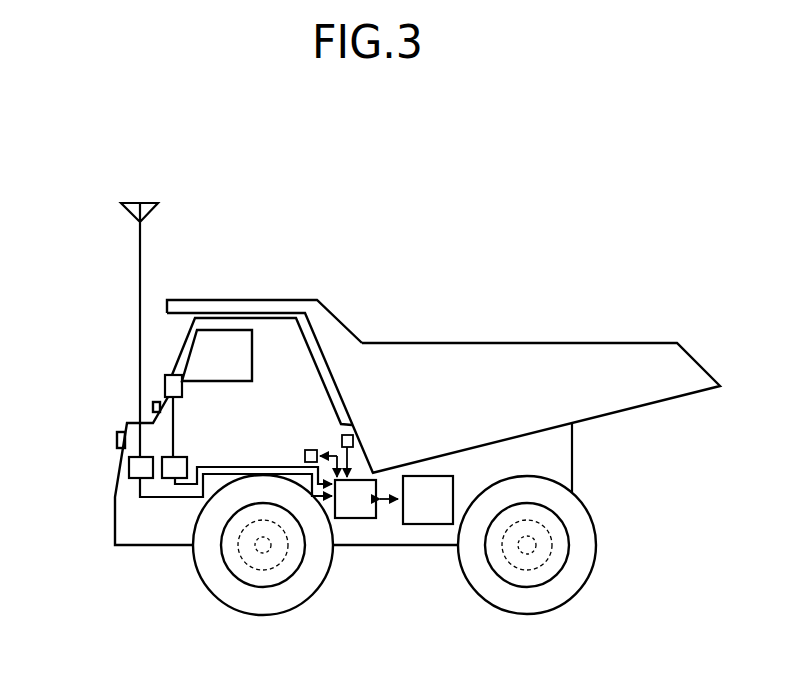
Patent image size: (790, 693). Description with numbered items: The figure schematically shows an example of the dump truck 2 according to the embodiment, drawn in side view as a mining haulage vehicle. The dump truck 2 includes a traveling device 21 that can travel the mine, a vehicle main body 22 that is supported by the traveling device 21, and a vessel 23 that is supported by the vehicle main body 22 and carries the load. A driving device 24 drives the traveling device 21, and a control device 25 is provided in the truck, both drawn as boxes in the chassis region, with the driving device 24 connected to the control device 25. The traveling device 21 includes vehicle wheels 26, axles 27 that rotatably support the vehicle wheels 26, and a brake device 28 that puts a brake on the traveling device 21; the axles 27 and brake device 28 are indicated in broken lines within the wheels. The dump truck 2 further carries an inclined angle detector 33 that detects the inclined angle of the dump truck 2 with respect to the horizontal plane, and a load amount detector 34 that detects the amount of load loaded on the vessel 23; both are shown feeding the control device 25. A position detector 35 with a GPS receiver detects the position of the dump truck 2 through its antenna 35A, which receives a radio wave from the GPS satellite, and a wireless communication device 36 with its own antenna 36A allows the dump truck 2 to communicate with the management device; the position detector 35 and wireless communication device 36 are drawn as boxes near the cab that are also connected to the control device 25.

The dump truck 2 is at (562, 170).
The traveling device 21 is at (604, 522).
The vehicle main body 22 is at (582, 466).
The vessel 23 is at (420, 342).
The driving device 24 is at (427, 525).
The control device 25 is at (355, 519).
The vehicle wheels 26 is at (268, 616).
The axles 27 is at (270, 548).
The brake device 28 is at (248, 565).
The inclined angle detector 33 is at (304, 455).
The load amount detector 34 is at (341, 438).
The position detector 35 is at (187, 465).
The antenna 35A is at (165, 378).
The wireless communication device 36 is at (129, 467).
The antenna 36A is at (141, 203).